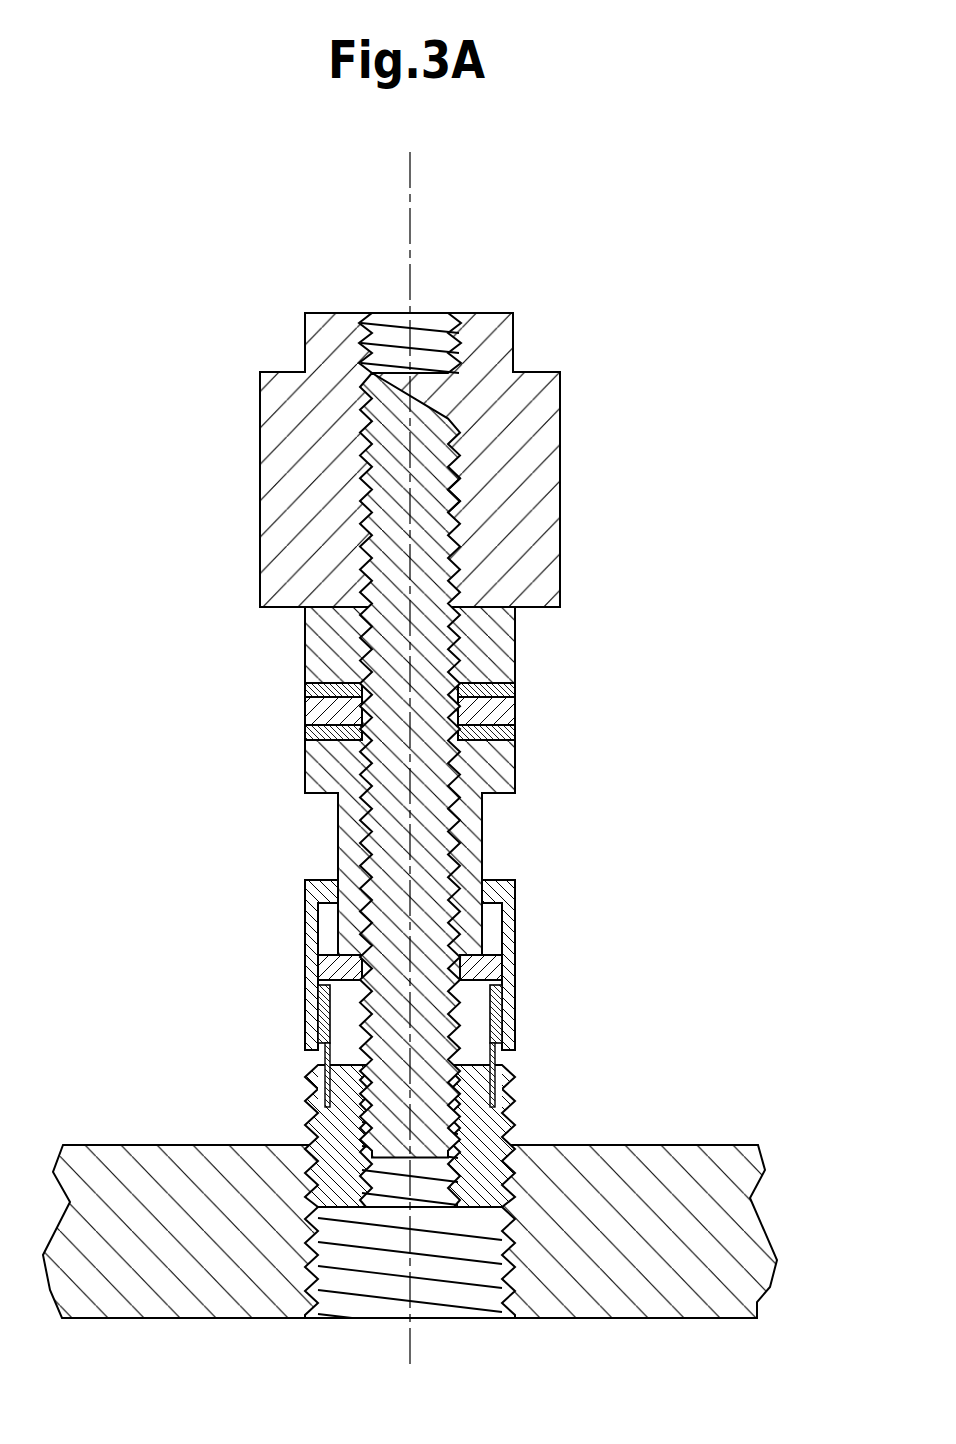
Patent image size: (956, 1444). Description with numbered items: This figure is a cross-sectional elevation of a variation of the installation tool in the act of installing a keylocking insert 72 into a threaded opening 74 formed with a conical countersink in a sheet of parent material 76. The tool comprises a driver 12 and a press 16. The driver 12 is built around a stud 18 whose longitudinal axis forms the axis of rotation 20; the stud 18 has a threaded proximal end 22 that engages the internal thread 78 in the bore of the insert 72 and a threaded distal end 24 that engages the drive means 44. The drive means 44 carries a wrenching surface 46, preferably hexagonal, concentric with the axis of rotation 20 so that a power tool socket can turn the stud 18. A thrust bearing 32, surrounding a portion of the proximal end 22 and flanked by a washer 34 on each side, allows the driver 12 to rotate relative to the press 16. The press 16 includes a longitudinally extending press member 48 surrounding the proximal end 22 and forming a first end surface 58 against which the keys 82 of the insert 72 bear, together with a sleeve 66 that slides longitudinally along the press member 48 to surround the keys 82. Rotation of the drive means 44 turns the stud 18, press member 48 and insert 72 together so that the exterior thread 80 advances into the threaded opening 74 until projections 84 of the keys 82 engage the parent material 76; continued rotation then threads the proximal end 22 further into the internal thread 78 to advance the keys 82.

The driver 12 is at (425, 372).
The press 16 is at (328, 842).
The stud 18 is at (383, 372).
The axis of rotation 20 is at (410, 172).
The threaded proximal end 22 is at (448, 1033).
The threaded distal end 24 is at (458, 490).
The thrust bearing 32 is at (515, 714).
The washer 34 is at (515, 690).
The drive means 44 is at (560, 418).
The wrenching surface 46 is at (513, 340).
The press member 48 is at (338, 822).
The first end surface 58 is at (305, 990).
The sleeve 66 is at (305, 900).
The insert 72 is at (510, 1080).
The threaded opening 74 is at (513, 1307).
The parent material 76 is at (655, 1318).
The internal thread 78 is at (358, 1188).
The exterior thread 80 is at (505, 1145).
The keys 82 is at (300, 997).
The projections 84 is at (305, 1023).